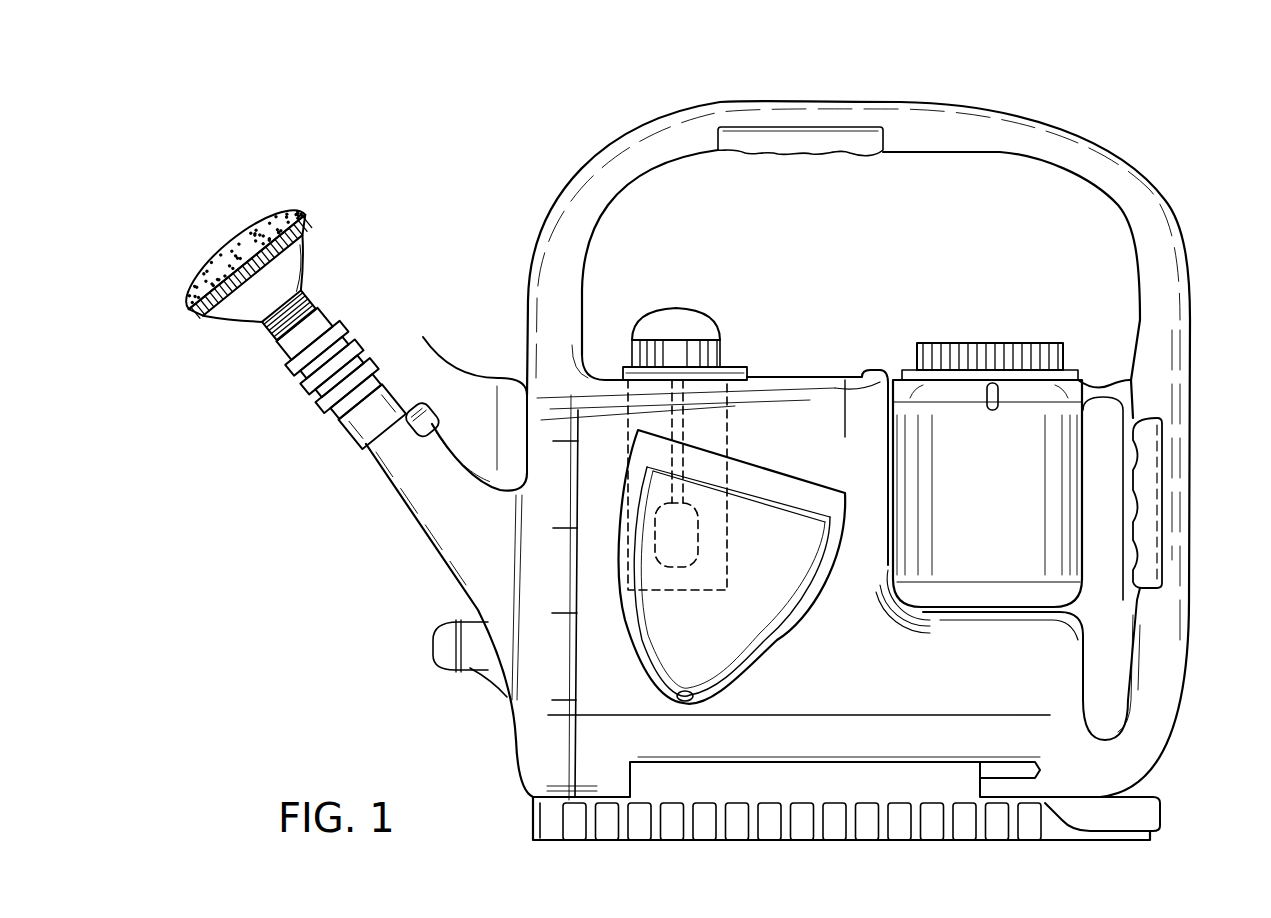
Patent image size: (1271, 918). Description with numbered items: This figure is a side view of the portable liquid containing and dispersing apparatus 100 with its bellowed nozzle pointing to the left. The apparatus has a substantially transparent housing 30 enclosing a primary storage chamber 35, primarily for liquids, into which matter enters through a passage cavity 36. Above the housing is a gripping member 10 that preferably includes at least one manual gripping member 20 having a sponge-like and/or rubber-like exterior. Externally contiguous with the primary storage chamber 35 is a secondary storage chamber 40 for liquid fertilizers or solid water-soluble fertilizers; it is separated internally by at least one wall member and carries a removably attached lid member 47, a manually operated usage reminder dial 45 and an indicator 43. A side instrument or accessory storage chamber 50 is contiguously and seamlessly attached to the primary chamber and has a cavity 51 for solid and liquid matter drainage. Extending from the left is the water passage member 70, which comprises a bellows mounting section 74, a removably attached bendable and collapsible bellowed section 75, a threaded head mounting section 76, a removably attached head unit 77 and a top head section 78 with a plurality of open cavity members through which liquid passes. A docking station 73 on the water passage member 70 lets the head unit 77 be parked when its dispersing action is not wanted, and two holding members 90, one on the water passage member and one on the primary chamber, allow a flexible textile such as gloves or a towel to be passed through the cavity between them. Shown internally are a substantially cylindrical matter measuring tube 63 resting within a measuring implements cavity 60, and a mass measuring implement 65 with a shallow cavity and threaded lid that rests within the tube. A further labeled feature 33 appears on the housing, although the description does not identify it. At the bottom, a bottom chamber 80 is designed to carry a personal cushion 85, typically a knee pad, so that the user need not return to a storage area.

The portable liquid containing and dispersing apparatus 100 is at (503, 124).
The gripping member 10 is at (1058, 116).
The manual gripping member 20 is at (836, 155).
The substantially transparent housing 30 is at (887, 372).
The fill level indicator 33 is at (576, 682).
The primary storage chamber 35 is at (848, 437).
The passage cavity 36 is at (818, 382).
The secondary storage chamber 40 is at (1037, 472).
The indicator 43 is at (999, 408).
The manually operated usage reminder dial 45 is at (1077, 378).
The removably attached lid member 47 is at (1025, 356).
The side instrument or accessory storage chamber 50 is at (773, 630).
The cavity for solid and liquid matter drainage 51 is at (683, 698).
The measuring implements cavity 60 is at (622, 383).
The matter measuring tube 63 is at (733, 430).
The mass measuring implement 65 is at (706, 318).
The water passage member 70 is at (432, 527).
The docking station 73 is at (446, 624).
The bellows mounting section 74 is at (358, 434).
The bellowed section 75 is at (306, 373).
The threaded head mounting section 76 is at (325, 310).
The head unit 77 is at (297, 276).
The top head section 78 is at (303, 212).
The bottom chamber 80 is at (707, 788).
The personal cushion 85 is at (1092, 818).
The holding members 90 is at (432, 400).